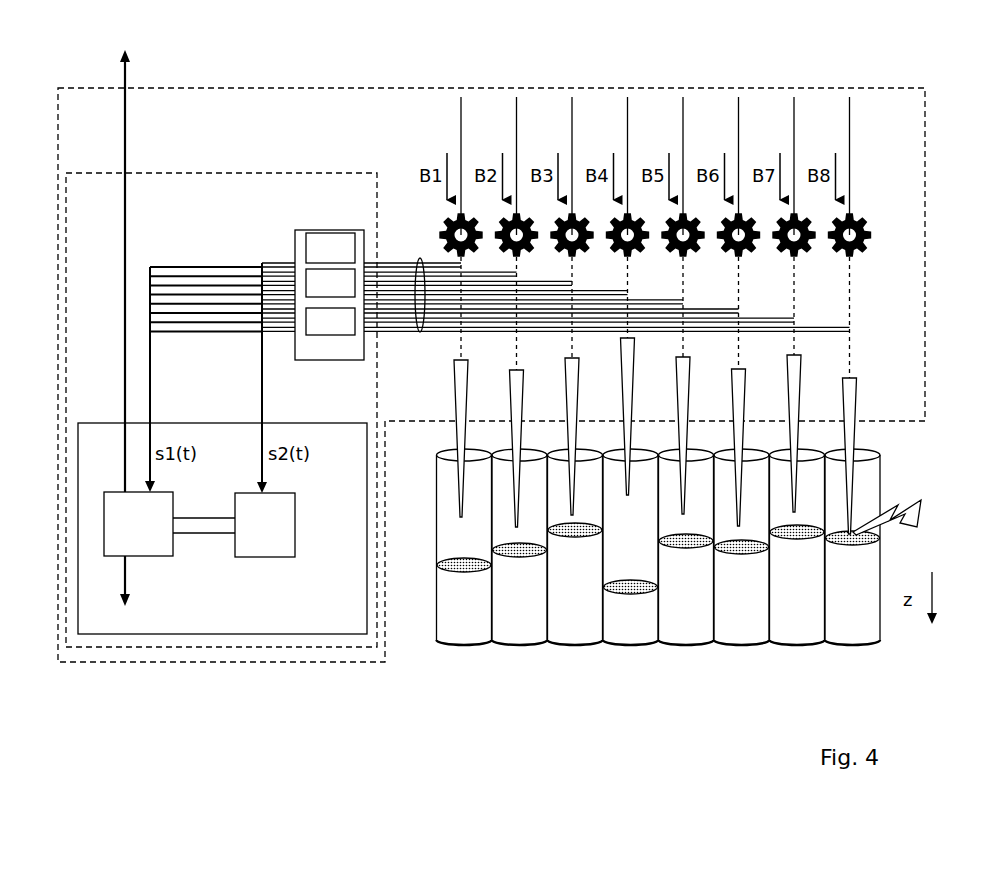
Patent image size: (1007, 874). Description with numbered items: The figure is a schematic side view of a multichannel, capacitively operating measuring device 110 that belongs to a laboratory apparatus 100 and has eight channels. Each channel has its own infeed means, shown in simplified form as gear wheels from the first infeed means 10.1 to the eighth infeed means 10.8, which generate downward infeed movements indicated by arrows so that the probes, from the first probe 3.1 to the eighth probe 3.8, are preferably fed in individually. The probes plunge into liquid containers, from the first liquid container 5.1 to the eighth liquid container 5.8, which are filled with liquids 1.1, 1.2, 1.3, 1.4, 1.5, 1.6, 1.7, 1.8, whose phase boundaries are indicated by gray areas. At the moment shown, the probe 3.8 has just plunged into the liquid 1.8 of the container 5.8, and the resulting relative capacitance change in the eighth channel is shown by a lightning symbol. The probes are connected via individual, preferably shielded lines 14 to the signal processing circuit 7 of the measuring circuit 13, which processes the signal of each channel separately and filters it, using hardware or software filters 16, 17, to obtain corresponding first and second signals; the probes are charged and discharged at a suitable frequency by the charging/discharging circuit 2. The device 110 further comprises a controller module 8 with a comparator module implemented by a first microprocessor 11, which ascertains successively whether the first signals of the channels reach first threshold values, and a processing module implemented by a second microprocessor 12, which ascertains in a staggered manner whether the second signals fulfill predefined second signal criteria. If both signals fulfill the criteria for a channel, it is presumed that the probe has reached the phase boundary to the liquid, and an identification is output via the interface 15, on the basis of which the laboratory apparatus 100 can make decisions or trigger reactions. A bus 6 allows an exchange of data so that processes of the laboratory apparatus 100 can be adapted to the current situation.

The laboratory apparatus 100 is at (801, 36).
The device 110 is at (318, 103).
The bus 6 is at (125, 103).
The measuring circuit 13 is at (372, 173).
The signal processing circuit 7 is at (329, 276).
The charging/discharging circuit 2 is at (337, 261).
The filter 16 is at (343, 295).
The filter 17 is at (343, 333).
The infeed means 10.1 is at (440, 229).
The infeed means 10.8 is at (870, 228).
The lines 14 is at (420, 332).
The probe 3.1 is at (455, 363).
The probe 3.8 is at (857, 383).
The controller module 8 is at (222, 507).
The first microprocessor 11 is at (165, 550).
The second microprocessor 12 is at (280, 548).
The cLLD interface 15 is at (125, 585).
The liquid container 5.1 is at (437, 522).
The liquid container 5.8 is at (873, 463).
The liquid 1.1 is at (466, 613).
The liquid 1.2 is at (521, 613).
The liquid 1.3 is at (577, 613).
The liquid 1.4 is at (632, 613).
The liquid 1.5 is at (688, 613).
The liquid 1.6 is at (743, 613).
The liquid 1.7 is at (799, 613).
The liquid 1.8 is at (854, 613).